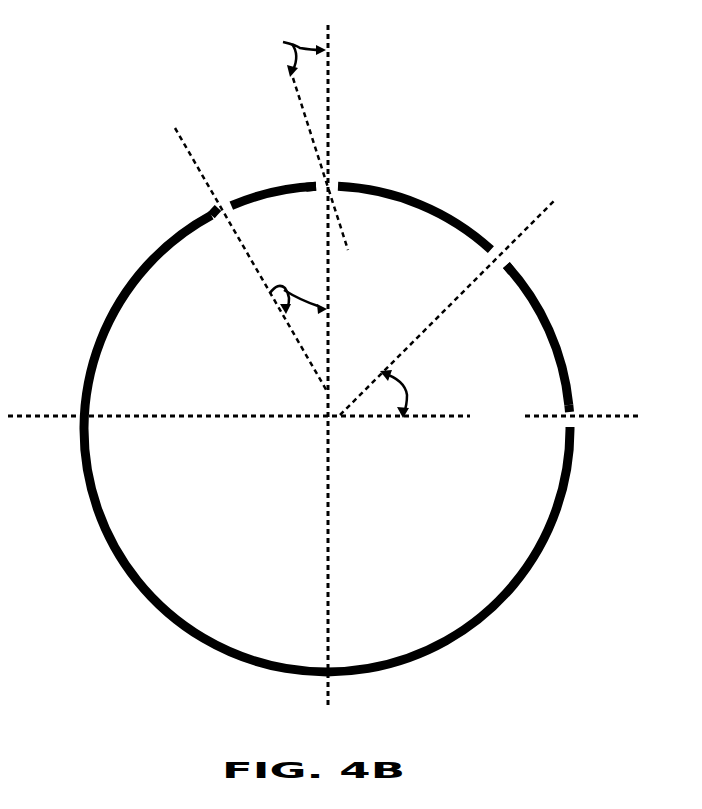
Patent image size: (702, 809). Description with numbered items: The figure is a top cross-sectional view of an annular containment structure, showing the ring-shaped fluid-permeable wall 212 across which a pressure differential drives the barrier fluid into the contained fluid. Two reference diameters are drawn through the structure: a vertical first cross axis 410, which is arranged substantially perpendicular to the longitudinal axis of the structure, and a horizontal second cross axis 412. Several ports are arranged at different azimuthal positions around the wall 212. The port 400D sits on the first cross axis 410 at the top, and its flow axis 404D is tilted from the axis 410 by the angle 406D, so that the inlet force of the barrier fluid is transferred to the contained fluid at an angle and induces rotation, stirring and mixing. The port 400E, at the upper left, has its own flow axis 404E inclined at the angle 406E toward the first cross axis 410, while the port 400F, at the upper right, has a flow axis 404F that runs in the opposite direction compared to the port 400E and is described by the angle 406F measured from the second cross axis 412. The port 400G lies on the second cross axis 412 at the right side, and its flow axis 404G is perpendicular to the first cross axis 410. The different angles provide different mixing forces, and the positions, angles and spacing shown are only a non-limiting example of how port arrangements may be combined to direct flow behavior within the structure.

The fluid-permeable wall 212 is at (99, 329).
The second cross axis 412 is at (153, 417).
The first cross axis 410 is at (327, 530).
The flow axis 404D is at (302, 108).
The flow axis 404E is at (181, 140).
The flow axis 404F is at (551, 208).
The flow axis 404G is at (630, 418).
The port 400D is at (296, 154).
The port 400E is at (196, 200).
The port 400F is at (506, 230).
The port 400G is at (598, 395).
The angle 406D is at (283, 42).
The angle 406E is at (270, 293).
The angle 406F is at (410, 390).